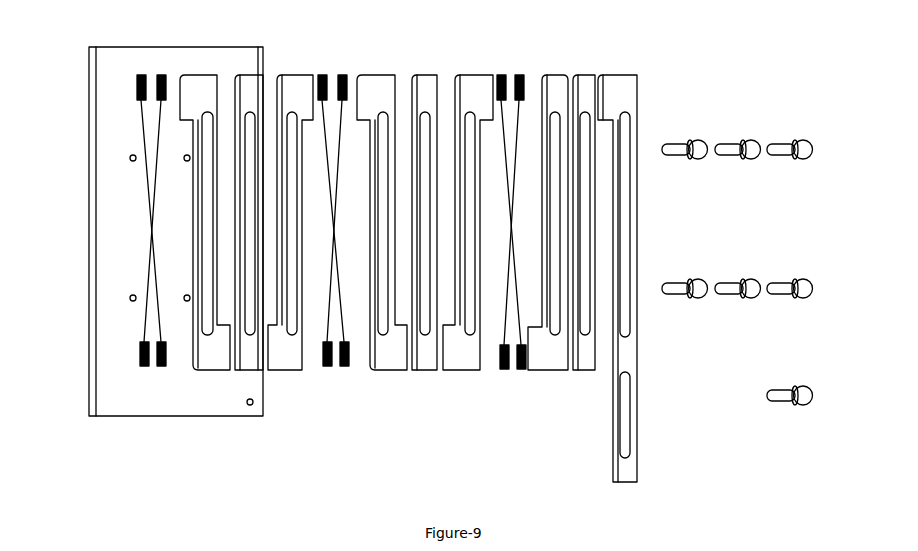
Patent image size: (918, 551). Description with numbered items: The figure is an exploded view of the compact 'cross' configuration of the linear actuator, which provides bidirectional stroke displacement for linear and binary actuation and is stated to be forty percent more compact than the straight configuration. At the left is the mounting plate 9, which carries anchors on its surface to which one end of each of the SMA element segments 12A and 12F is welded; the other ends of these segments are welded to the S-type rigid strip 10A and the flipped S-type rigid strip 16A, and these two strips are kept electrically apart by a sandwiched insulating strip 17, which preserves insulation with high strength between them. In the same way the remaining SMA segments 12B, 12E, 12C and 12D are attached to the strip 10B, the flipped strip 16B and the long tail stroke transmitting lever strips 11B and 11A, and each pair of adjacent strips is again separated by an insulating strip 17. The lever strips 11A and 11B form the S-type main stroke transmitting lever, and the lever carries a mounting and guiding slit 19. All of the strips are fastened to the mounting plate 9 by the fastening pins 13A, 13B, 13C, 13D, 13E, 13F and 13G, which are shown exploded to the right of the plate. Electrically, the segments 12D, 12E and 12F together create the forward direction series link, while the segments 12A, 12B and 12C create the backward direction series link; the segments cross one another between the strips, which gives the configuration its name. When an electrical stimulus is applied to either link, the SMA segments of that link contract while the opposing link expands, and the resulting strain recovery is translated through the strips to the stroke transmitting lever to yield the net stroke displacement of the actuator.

The mounting plate 9 is at (98, 92).
The S-type rigid strip 10A is at (303, 82).
The S-type rigid strip 10B is at (477, 82).
The S-type long tail stroke transmitting lever 11A is at (627, 82).
The S-type long tail stroke transmitting lever 11B is at (552, 82).
The segment of the SMA element 12A is at (145, 147).
The segment of the SMA element 12B is at (330, 333).
The segment of the SMA element 12C is at (505, 332).
The segment of the SMA element 12D is at (523, 340).
The segment of the SMA element 12E is at (343, 332).
The segment of the SMA element 12F is at (147, 317).
The fastening pin 13A is at (707, 155).
The fastening pin 13B is at (707, 293).
The fastening pin 13C is at (757, 153).
The fastening pin 13D is at (757, 291).
The fastening pin 13E is at (807, 153).
The fastening pin 13F is at (807, 291).
The fastening pin 13G is at (815, 400).
The flipped S-type rigid strip 16A is at (207, 82).
The flipped S-type rigid strip 16B is at (382, 82).
The insulating strip 17 is at (252, 82).
The mounting and guiding slit 19 is at (628, 430).